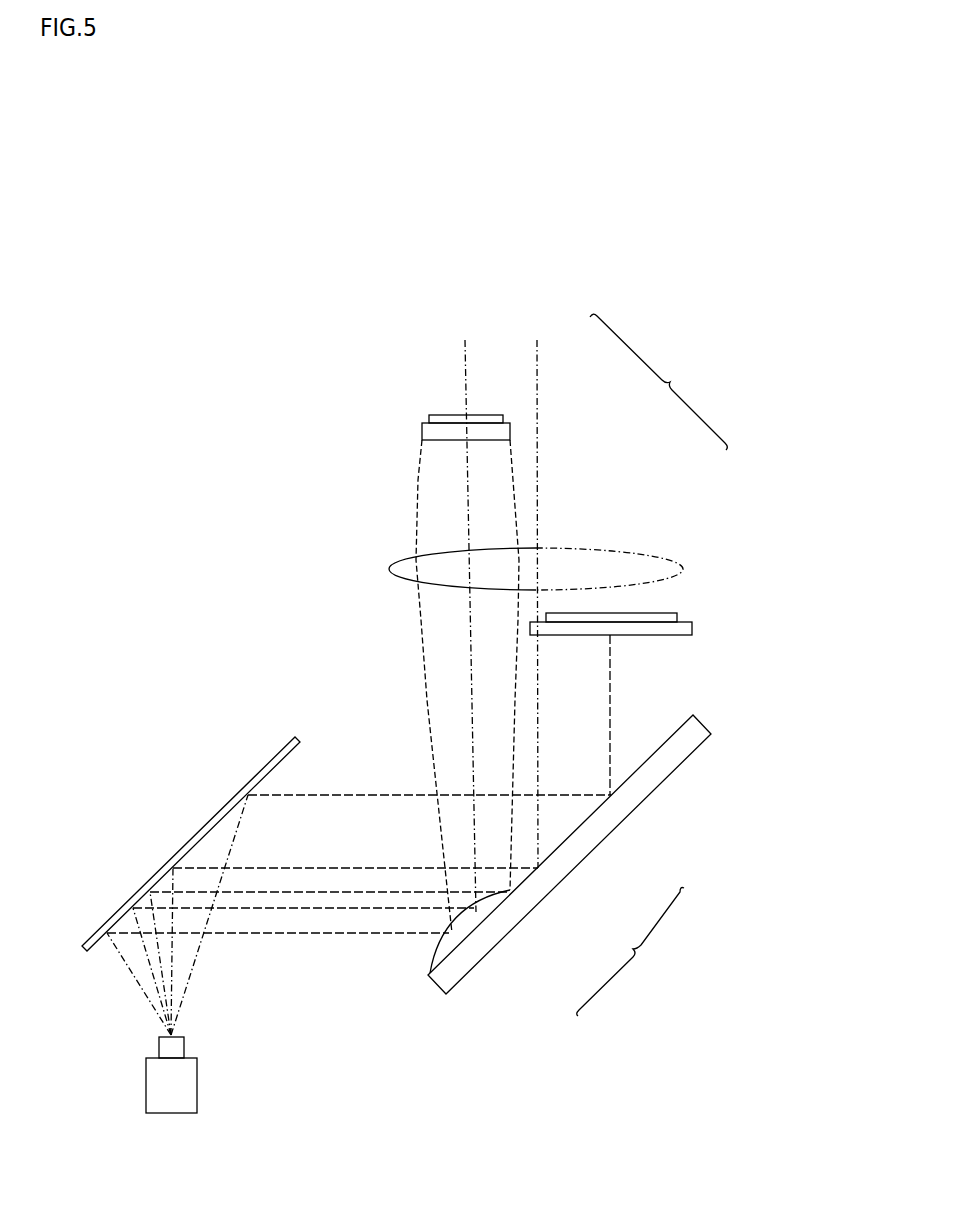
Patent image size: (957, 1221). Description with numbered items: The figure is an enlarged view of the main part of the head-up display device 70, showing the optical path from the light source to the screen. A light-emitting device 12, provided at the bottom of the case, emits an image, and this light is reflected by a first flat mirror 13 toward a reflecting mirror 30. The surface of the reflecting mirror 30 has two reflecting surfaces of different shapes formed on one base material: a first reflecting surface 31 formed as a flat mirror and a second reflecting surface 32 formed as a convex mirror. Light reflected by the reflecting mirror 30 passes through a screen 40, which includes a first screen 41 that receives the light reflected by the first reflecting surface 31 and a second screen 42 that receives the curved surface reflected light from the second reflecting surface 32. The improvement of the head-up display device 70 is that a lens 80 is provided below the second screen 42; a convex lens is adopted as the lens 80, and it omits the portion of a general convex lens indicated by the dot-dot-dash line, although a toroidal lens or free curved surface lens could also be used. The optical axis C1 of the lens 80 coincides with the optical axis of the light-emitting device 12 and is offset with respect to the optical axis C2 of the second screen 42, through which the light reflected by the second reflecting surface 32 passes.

The light-emitting device 12 is at (198, 1085).
The first flat mirror 13 is at (250, 780).
The reflecting mirror 30 is at (630, 952).
The first reflecting surface 31 is at (584, 808).
The second reflecting surface 32 is at (463, 912).
The screen 40 is at (658, 382).
The first screen 41 is at (627, 612).
The second screen 42 is at (473, 413).
The head-up display device 70 is at (733, 272).
The lens 80 is at (398, 562).
The optical axis of the lens C1 is at (532, 338).
The optical axis of the second screen C2 is at (460, 338).